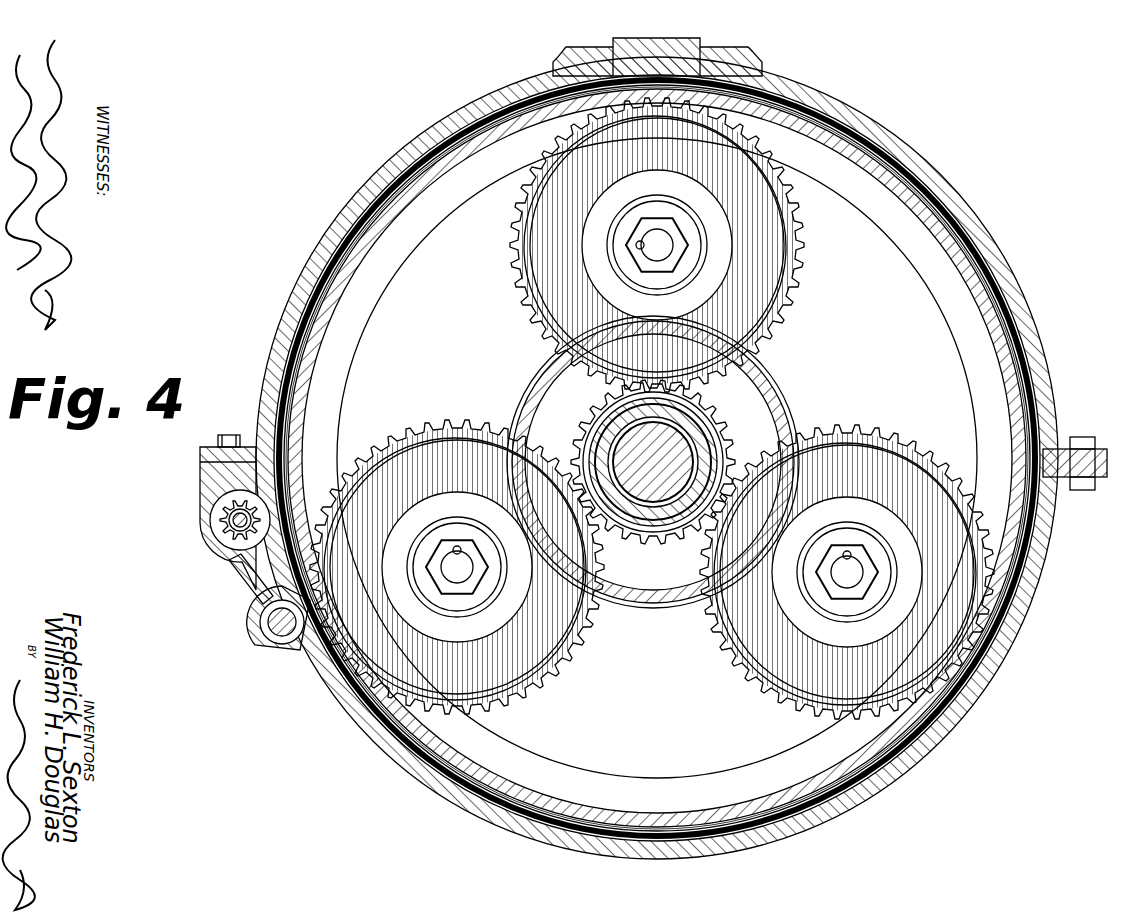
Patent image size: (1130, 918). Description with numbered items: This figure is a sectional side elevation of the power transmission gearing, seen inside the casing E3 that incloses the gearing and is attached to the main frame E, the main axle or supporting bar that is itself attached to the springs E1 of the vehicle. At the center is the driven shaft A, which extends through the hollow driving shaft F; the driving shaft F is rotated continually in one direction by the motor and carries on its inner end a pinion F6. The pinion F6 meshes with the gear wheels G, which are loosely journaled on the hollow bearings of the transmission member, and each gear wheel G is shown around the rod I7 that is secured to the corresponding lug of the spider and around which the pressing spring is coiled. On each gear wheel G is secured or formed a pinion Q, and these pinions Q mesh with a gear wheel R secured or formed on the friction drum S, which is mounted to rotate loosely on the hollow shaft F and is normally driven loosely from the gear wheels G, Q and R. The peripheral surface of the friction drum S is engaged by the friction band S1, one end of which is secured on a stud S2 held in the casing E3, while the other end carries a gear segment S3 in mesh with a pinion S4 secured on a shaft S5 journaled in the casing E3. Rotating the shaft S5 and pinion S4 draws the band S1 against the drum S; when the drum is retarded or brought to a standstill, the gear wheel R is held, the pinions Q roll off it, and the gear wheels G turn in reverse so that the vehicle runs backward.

The main axle or supporting bar E is at (588, 57).
The springs E1 is at (268, 600).
The casing E3 is at (414, 147).
The friction drum S is at (356, 262).
The friction band S1 is at (1012, 318).
The stud S2 is at (280, 638).
The gear segment S3 is at (254, 419).
The pinion S4 is at (228, 516).
The shaft S5 is at (236, 532).
The gear wheels G is at (781, 320).
The pinion Q is at (720, 244).
The rod I7 is at (843, 570).
The gear wheel R is at (538, 383).
The hollow driving shaft F is at (612, 430).
The pinion F6 is at (712, 428).
The driven shaft A is at (628, 454).